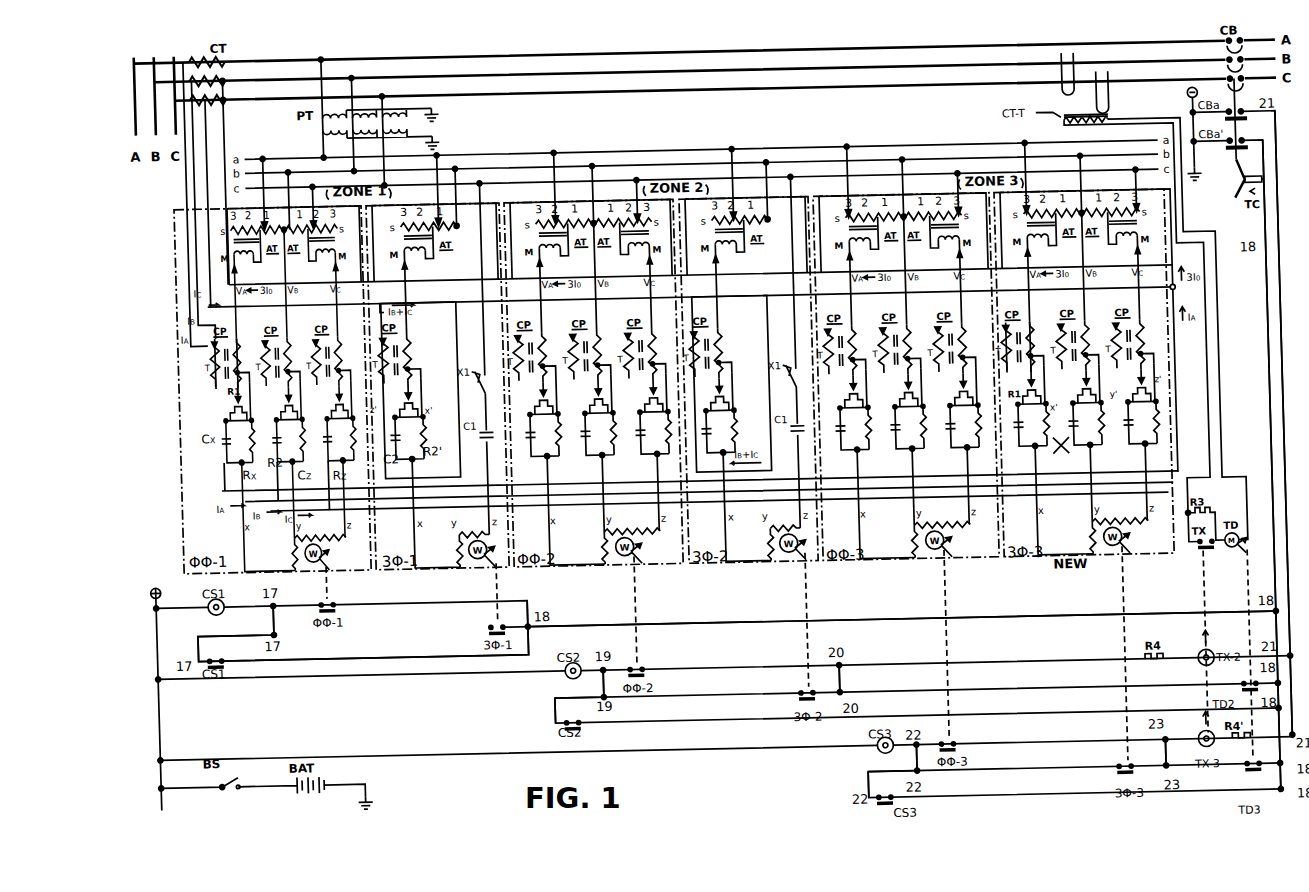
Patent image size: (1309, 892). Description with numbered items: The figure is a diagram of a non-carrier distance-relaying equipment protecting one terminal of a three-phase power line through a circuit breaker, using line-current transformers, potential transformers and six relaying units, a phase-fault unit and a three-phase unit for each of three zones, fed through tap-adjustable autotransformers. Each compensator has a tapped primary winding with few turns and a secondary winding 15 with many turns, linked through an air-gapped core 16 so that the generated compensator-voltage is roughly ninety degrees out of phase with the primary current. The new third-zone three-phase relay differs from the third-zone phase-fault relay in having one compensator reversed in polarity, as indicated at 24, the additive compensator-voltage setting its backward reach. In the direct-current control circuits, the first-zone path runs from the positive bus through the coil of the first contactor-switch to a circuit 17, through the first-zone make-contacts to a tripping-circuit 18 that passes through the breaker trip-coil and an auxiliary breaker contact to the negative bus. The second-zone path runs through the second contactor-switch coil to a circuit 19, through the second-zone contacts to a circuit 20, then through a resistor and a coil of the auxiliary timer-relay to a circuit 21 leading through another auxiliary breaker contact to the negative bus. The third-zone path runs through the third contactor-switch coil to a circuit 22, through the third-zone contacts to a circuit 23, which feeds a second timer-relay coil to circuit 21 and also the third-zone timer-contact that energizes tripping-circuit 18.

The secondary winding 15 is at (240, 348).
The air-gapped core 16 is at (218, 373).
The circuit 17 is at (351, 627).
The tripping-circuit 18 is at (912, 477).
The circuit 19 is at (584, 686).
The circuit 20 is at (844, 681).
The circuit 21 is at (1277, 423).
The circuit 22 is at (887, 766).
The circuit 23 is at (1164, 754).
The reversed compensator polarity 24 is at (1070, 448).